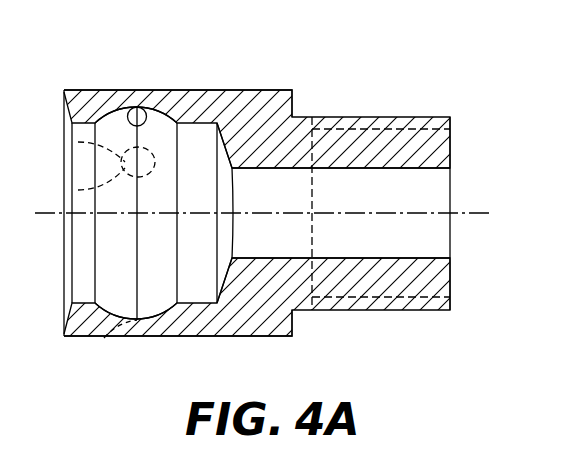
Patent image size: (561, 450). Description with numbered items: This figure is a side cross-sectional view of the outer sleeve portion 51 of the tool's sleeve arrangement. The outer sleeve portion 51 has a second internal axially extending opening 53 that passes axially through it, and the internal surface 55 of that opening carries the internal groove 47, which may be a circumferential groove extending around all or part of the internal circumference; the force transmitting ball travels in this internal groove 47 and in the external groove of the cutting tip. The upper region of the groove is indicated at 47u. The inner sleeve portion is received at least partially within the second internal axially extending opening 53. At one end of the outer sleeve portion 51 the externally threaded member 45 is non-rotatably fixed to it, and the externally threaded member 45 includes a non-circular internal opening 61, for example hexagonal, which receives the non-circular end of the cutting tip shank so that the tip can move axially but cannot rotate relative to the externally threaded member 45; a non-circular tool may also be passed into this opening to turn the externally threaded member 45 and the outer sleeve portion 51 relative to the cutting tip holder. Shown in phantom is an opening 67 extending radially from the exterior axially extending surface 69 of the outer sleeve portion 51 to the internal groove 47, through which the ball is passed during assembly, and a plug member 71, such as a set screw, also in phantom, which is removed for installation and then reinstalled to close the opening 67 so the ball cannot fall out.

The externally threaded member 45 is at (386, 110).
The internal groove 47 is at (148, 110).
The upper arcuate seat surface 47u is at (110, 112).
The outer sleeve portion 51 is at (285, 66).
The second internal axially extending opening 53 is at (202, 270).
The internal surface 55 is at (192, 302).
The non-circular internal opening 61 is at (281, 238).
The opening 67 is at (78, 142).
The exterior axially extending surface 69 is at (202, 90).
The plug member 71 is at (78, 190).